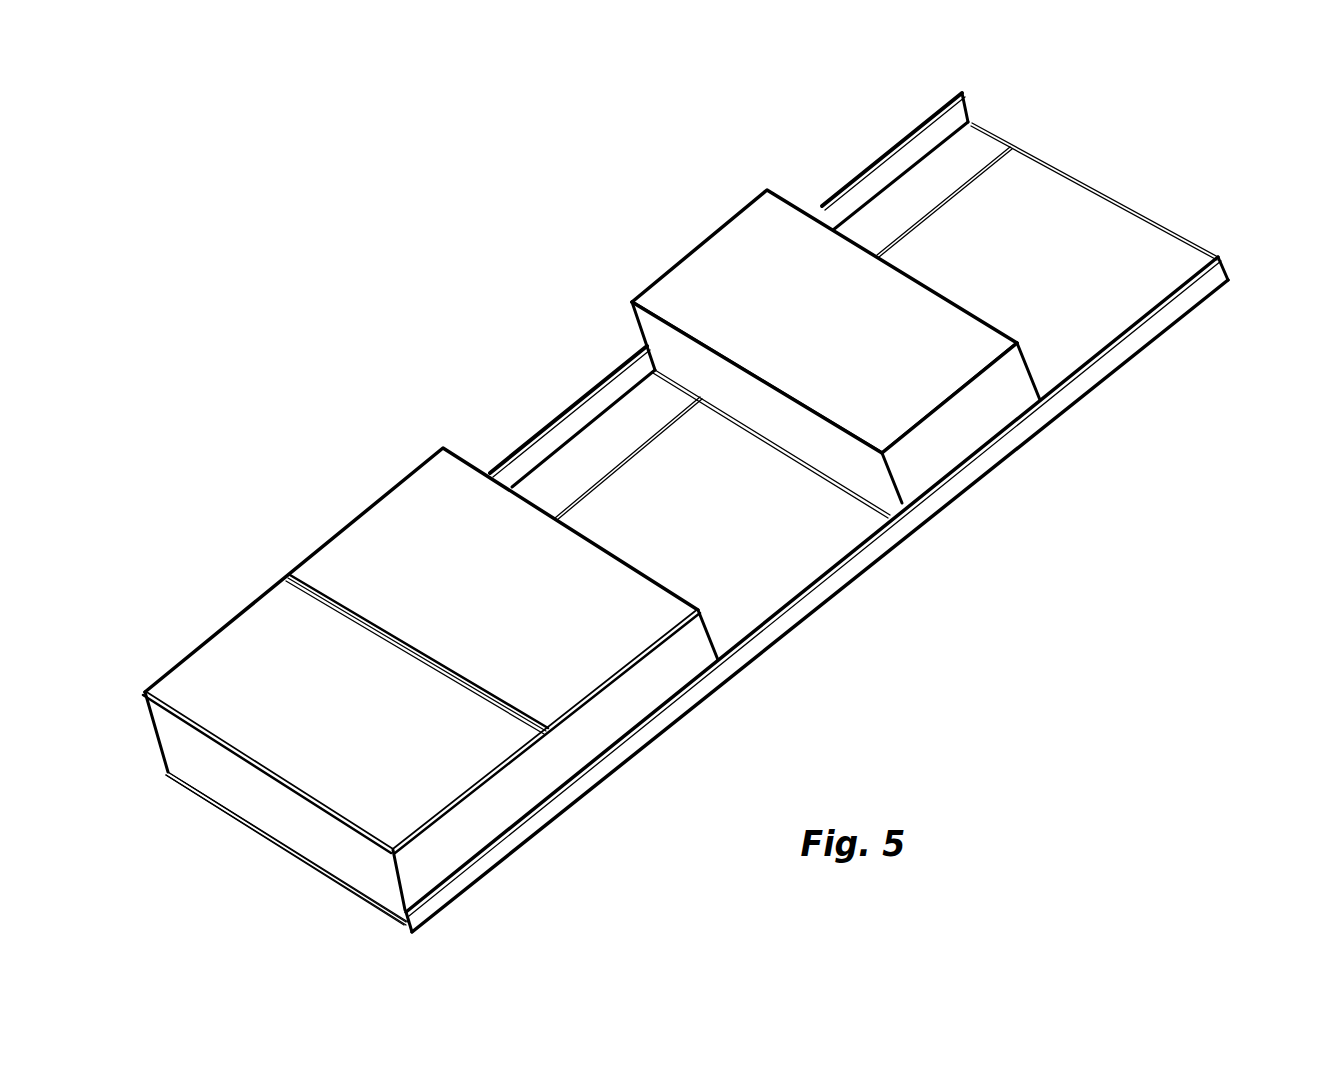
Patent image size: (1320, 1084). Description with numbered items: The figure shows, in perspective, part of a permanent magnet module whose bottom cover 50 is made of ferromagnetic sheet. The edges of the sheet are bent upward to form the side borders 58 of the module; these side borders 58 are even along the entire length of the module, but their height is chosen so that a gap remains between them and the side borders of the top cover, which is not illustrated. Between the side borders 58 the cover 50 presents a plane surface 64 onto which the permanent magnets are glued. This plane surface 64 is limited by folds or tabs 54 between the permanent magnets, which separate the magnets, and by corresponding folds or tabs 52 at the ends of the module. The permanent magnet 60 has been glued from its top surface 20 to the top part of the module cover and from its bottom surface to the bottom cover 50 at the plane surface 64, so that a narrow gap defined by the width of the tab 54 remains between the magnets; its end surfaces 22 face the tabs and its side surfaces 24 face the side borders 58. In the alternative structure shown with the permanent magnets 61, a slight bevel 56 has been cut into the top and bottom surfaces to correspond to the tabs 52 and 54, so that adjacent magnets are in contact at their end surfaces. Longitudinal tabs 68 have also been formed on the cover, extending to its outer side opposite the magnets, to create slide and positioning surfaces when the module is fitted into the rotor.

The top surface 20 is at (867, 330).
The end surfaces 22 is at (888, 478).
The side surfaces 24 is at (937, 433).
The cover 50 is at (717, 507).
The tabs 52 is at (692, 507).
The tabs 54 is at (833, 453).
The bevel 56 is at (550, 735).
The side borders 58 is at (888, 170).
The permanent magnet 60 is at (848, 397).
The permanent magnets 61 is at (430, 681).
The plane surface 64 is at (753, 520).
The longitudinal tabs 68 is at (963, 185).